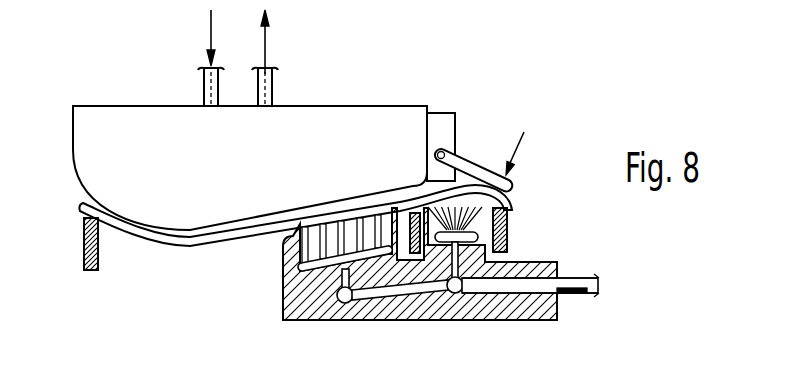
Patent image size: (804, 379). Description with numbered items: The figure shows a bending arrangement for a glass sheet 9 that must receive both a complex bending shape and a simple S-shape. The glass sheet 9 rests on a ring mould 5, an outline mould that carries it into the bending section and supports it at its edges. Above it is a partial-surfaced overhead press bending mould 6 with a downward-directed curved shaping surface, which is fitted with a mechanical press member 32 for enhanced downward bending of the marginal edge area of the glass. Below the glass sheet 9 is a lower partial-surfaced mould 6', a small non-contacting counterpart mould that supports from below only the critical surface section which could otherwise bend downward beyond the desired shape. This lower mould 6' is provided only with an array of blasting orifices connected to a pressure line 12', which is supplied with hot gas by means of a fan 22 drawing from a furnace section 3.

The overhead press bending mould 6 is at (264, 120).
The lower partial-surfaced mould 6' is at (420, 291).
The glass sheet 9 is at (197, 245).
The ring mould 5 is at (83, 253).
The mechanical press member 32 is at (517, 184).
The fan 22 is at (575, 288).
The furnace section 3 is at (530, 285).
The pressure line 12' is at (601, 319).